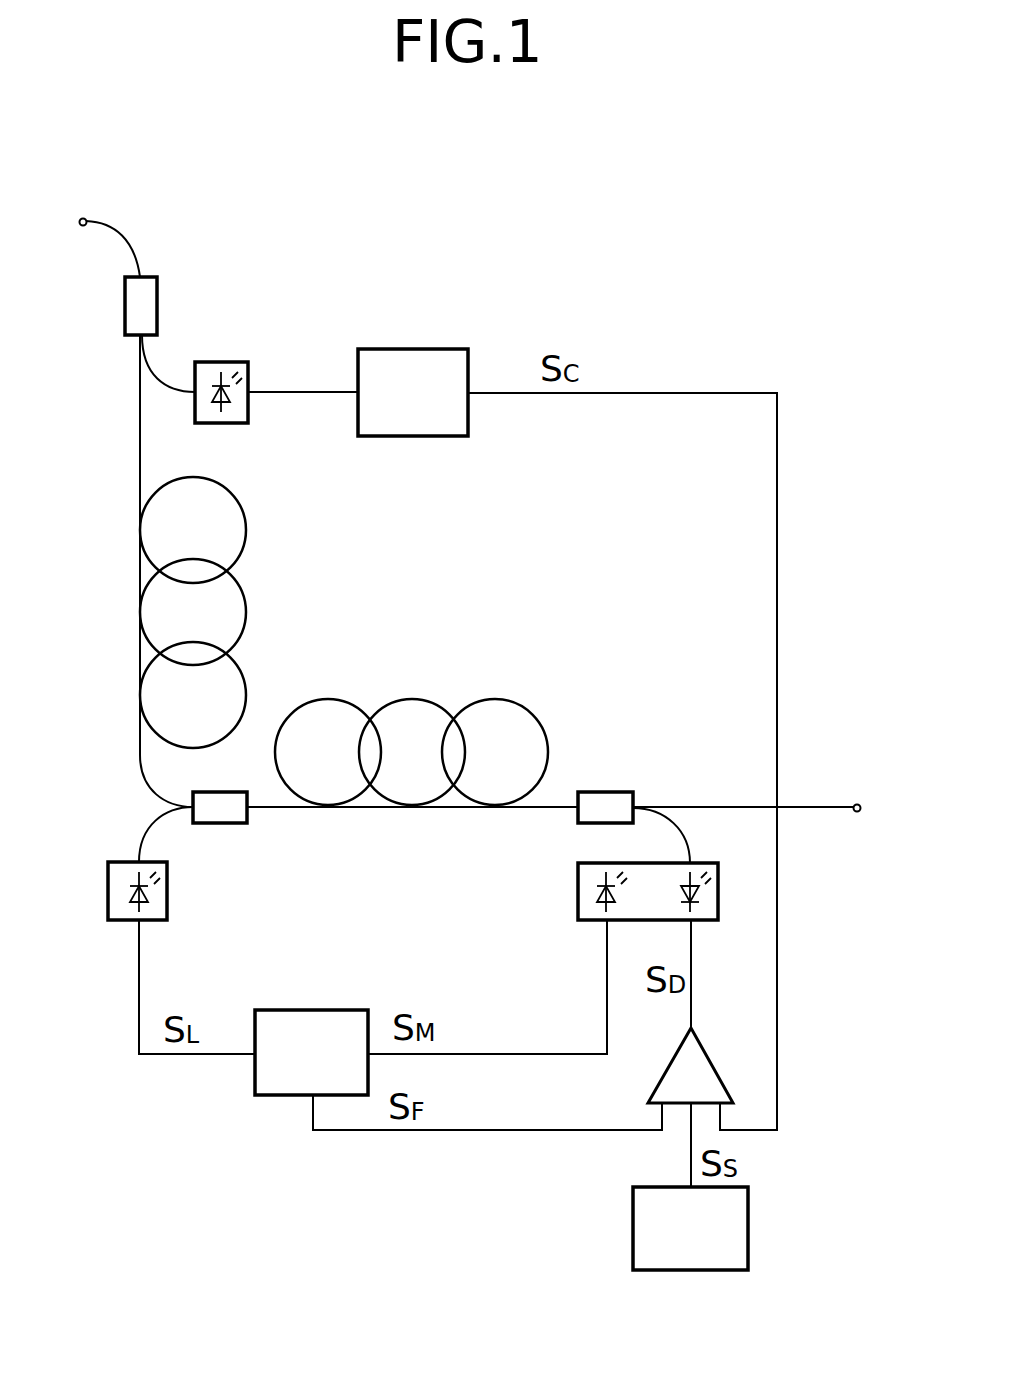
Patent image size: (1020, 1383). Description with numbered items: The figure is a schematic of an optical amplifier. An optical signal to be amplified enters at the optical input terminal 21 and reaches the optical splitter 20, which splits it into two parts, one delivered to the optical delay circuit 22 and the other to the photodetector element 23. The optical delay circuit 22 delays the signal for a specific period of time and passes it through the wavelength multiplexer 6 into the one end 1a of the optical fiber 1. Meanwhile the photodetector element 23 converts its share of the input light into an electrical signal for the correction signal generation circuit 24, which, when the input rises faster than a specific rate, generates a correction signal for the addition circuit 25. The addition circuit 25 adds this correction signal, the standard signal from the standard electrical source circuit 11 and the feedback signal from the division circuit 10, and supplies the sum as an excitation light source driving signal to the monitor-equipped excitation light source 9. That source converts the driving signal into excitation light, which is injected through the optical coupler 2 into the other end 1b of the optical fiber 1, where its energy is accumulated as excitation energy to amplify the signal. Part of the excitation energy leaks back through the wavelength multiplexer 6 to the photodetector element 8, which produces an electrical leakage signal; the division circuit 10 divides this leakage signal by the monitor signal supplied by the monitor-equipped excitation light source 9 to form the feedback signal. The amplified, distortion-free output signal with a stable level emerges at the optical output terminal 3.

The optical fiber 1 is at (428, 699).
The one end of the optical fiber 1a is at (248, 810).
The other end of the optical fiber 1b is at (578, 804).
The optical coupler 2 is at (625, 792).
The optical output terminal 3 is at (858, 804).
The wavelength multiplexer 6 is at (222, 823).
The photodetector element 8 is at (108, 882).
The monitor-equipped excitation light source 9 is at (578, 898).
The division circuit 10 is at (345, 1010).
The standard electrical source circuit 11 is at (748, 1227).
The optical splitter 20 is at (158, 293).
The optical input terminal 21 is at (86, 220).
The optical delay circuit 22 is at (247, 612).
The photodetector element 23 is at (235, 362).
The correction signal generation circuit 24 is at (436, 349).
The addition circuit 25 is at (717, 1072).